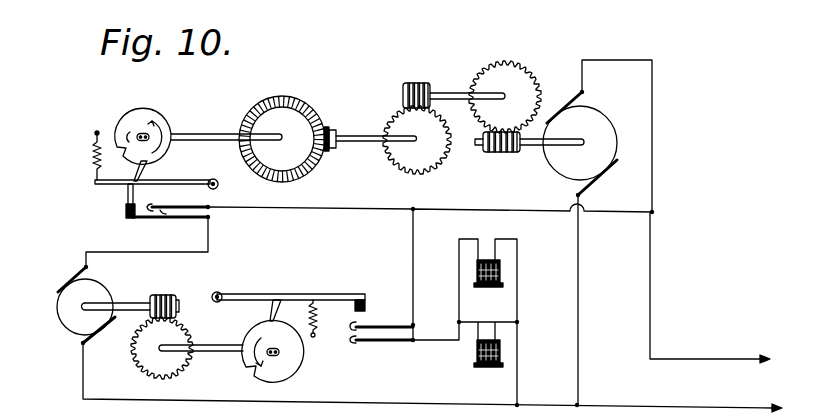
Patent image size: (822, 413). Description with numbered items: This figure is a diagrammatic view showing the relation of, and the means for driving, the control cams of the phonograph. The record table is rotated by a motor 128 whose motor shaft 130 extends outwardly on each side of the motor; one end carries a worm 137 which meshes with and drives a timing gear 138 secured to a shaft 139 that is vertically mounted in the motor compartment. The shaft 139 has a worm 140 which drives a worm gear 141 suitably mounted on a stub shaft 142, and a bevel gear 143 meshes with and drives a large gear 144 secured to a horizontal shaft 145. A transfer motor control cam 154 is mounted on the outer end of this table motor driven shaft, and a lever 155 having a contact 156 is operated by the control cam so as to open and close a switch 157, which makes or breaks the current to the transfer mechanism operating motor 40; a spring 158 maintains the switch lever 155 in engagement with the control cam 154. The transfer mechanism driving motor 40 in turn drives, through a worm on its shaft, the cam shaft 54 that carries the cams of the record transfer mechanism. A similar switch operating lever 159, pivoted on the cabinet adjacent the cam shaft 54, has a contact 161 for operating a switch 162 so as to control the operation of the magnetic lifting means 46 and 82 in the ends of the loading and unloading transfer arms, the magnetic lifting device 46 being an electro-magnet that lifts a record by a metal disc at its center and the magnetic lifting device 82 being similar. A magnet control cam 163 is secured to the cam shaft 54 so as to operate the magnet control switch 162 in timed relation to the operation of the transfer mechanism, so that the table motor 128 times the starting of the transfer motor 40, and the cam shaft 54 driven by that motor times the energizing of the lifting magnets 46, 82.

The transfer mechanism driving motor 40 is at (72, 320).
The magnetic lifting device 46 is at (503, 270).
The cam shaft 54 is at (216, 356).
The magnetic lifting device 82 is at (503, 350).
The motor 128 is at (592, 120).
The motor shaft 130 is at (560, 146).
The worm 137 is at (490, 154).
The timing gear 138 is at (512, 82).
The shaft 139 is at (450, 93).
The worm 140 is at (417, 83).
The worm gear 141 is at (406, 170).
The stub shaft 142 is at (358, 136).
The bevel gear 143 is at (332, 152).
The large gear 144 is at (272, 180).
The horizontal shaft 145 is at (200, 135).
The transfer motor control cam 154 is at (142, 117).
The lever 155 is at (108, 184).
The contact 156 is at (124, 200).
The switch 157 is at (162, 219).
The spring 158 is at (92, 152).
The switch operating lever 159 is at (285, 296).
The contact 161 is at (390, 280).
The switch 162 is at (394, 345).
The magnet control cam 163 is at (287, 364).